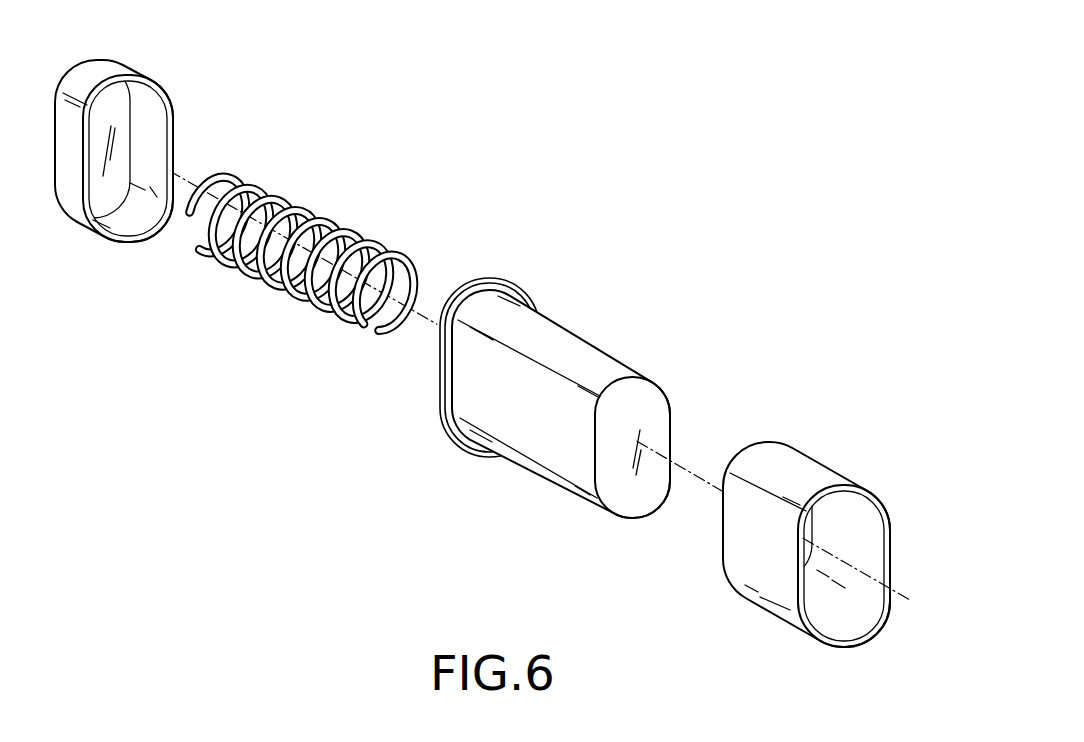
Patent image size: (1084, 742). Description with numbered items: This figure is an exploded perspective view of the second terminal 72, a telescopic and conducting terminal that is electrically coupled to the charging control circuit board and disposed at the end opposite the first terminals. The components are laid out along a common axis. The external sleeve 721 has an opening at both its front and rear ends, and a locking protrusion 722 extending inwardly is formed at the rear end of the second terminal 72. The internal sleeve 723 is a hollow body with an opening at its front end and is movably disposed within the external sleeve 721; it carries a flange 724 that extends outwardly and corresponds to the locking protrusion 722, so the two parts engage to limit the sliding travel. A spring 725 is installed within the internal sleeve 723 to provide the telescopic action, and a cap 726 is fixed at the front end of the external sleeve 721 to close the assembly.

The second terminal 72 is at (940, 421).
The external sleeve 721 is at (800, 473).
The locking protrusion 722 is at (882, 537).
The internal sleeve 723 is at (568, 350).
The flange 724 is at (472, 283).
The spring 725 is at (325, 236).
The cap 726 is at (124, 72).